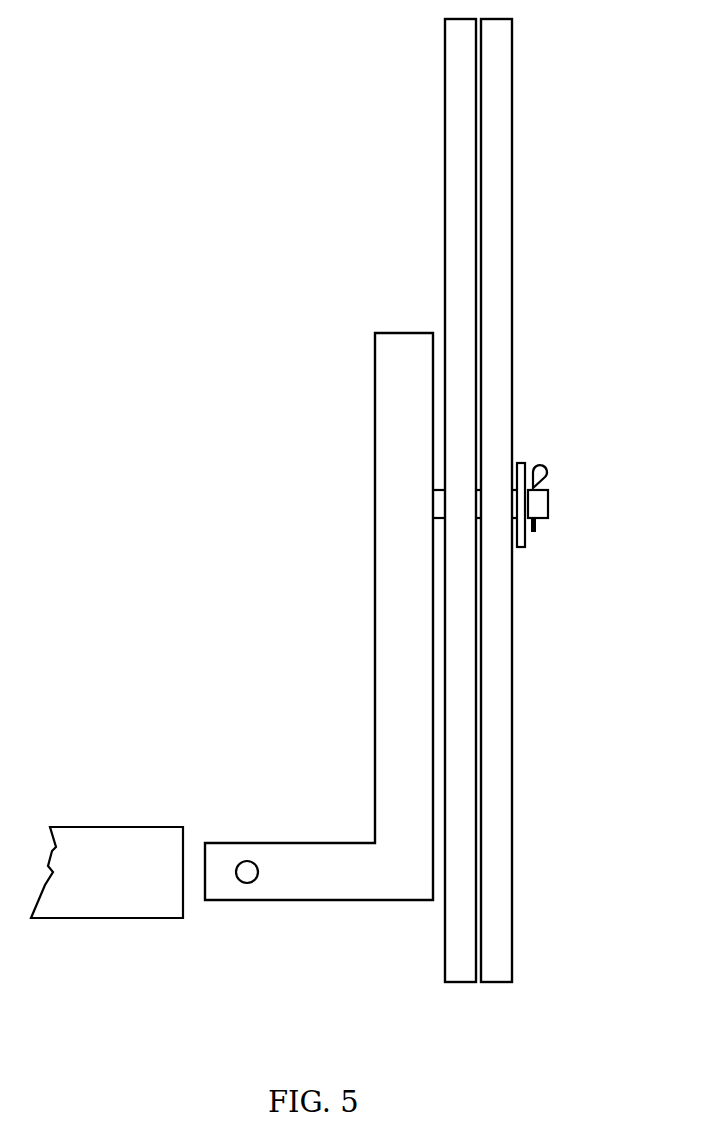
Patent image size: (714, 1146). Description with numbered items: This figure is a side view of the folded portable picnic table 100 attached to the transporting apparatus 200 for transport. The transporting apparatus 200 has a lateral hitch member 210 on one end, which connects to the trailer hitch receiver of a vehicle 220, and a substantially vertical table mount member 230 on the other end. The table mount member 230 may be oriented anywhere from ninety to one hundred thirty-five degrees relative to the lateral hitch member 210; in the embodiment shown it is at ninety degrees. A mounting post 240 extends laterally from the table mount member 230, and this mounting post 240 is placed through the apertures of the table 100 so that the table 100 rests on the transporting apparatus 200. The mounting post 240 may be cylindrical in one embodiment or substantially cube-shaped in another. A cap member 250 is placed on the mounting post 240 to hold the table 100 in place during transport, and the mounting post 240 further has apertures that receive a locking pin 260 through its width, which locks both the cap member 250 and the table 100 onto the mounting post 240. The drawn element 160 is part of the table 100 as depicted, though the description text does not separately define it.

The table 100 is at (556, 500).
The pole member 160 is at (495, 285).
The transporting apparatus 200 is at (319, 648).
The lateral hitch member 210 is at (303, 882).
The vehicle 220 is at (72, 893).
The table mount member 230 is at (388, 510).
The mounting post 240 is at (535, 505).
The cap member 250 is at (522, 463).
The locking pin 260 is at (548, 472).